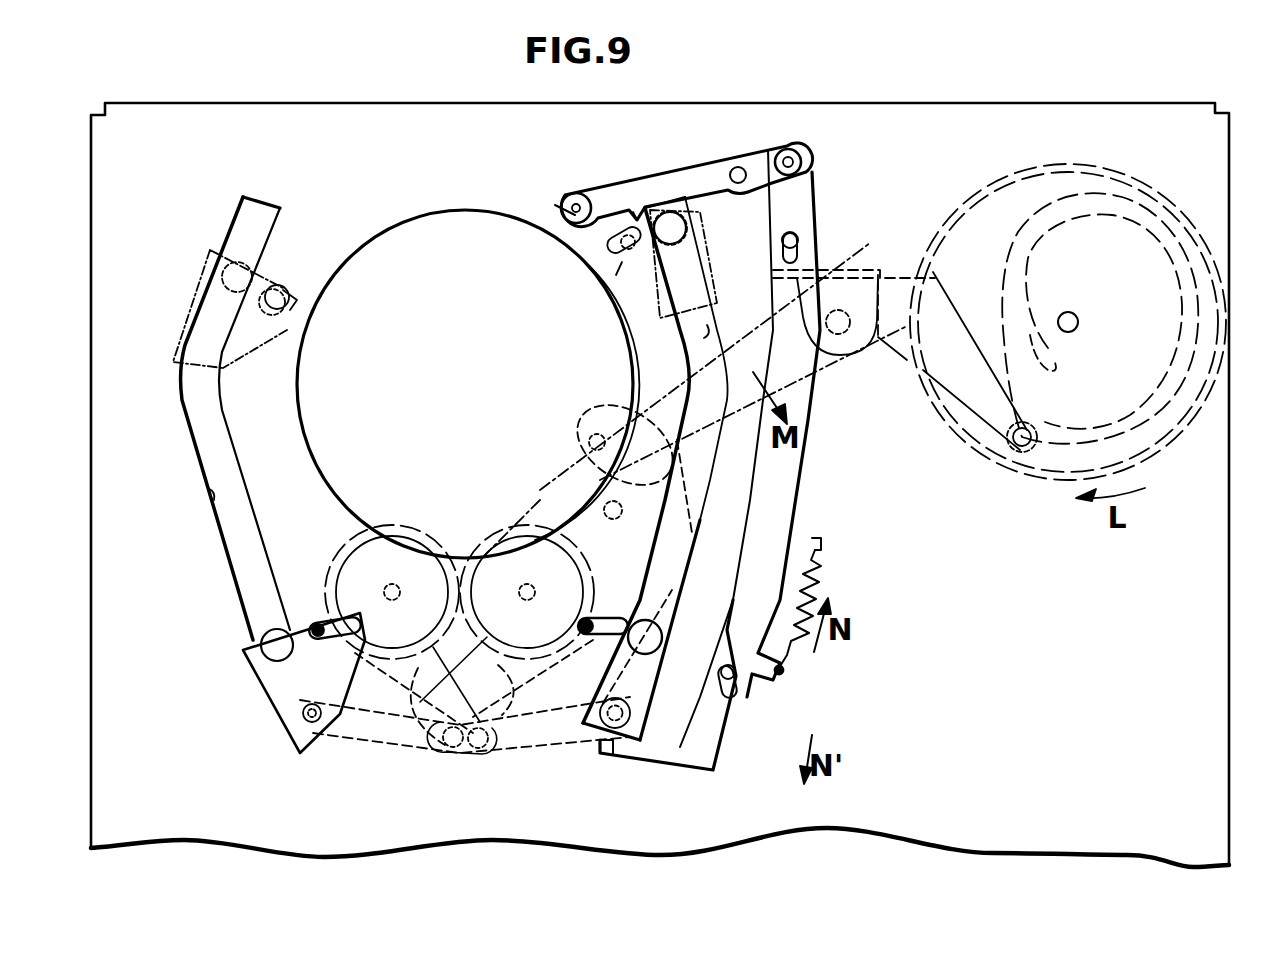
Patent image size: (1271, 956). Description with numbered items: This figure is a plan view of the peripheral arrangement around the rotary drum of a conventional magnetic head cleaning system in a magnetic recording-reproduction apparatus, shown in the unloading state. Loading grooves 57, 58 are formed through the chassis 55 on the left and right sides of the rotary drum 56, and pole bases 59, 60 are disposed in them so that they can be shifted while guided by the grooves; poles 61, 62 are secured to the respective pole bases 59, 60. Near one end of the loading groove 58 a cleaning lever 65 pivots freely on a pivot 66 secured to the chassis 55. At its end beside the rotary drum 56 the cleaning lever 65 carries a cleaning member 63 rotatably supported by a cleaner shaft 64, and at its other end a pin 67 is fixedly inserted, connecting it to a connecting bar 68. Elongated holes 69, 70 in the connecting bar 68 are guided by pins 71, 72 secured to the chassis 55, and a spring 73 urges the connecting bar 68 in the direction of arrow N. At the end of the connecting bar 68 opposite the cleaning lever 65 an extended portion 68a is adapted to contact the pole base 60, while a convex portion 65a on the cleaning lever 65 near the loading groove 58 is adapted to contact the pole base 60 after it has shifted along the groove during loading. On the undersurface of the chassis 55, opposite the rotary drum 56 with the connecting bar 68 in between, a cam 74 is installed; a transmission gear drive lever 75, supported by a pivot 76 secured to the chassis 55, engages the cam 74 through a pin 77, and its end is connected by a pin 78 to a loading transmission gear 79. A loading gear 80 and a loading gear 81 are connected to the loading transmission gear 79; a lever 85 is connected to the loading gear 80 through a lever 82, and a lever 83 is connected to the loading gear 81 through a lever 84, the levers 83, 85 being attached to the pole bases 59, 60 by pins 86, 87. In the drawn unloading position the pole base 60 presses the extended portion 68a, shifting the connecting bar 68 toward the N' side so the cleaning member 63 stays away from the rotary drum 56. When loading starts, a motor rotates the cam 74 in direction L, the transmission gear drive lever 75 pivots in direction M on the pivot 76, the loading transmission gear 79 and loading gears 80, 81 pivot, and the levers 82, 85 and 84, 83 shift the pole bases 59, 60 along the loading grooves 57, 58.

The chassis 55 is at (1165, 114).
The rotary drum 56 is at (446, 230).
The loading groove 57 is at (210, 488).
The loading groove 58 is at (708, 330).
The pole base 59 is at (182, 316).
The pole base 60 is at (695, 250).
The pole 61 is at (282, 288).
The pole 62 is at (633, 284).
The cleaning member 63 is at (562, 212).
The cleaner shaft 64 is at (575, 202).
The cleaning lever 65 is at (674, 180).
The convex portion 65a is at (633, 205).
The pivot 66 is at (741, 167).
The pin 67 is at (798, 158).
The connecting bar 68 is at (812, 194).
The extended portion 68a is at (612, 755).
The elongated hole 69 is at (800, 256).
The elongated hole 70 is at (733, 698).
The pin 71 is at (796, 240).
The pin 72 is at (740, 680).
The spring 73 is at (822, 590).
The cam 74 is at (1128, 190).
The transmission gear drive lever 75 is at (895, 345).
The pivot 76 is at (832, 315).
The pin 77 is at (1030, 428).
The pin 78 is at (598, 438).
The loading transmission gear 79 is at (540, 478).
The loading gear 80 is at (498, 560).
The loading gear 81 is at (410, 560).
The lever 82 is at (495, 705).
The lever 83 is at (402, 752).
The lever 84 is at (410, 690).
The lever 85 is at (526, 750).
The pin 86 is at (312, 725).
The pin 87 is at (592, 745).